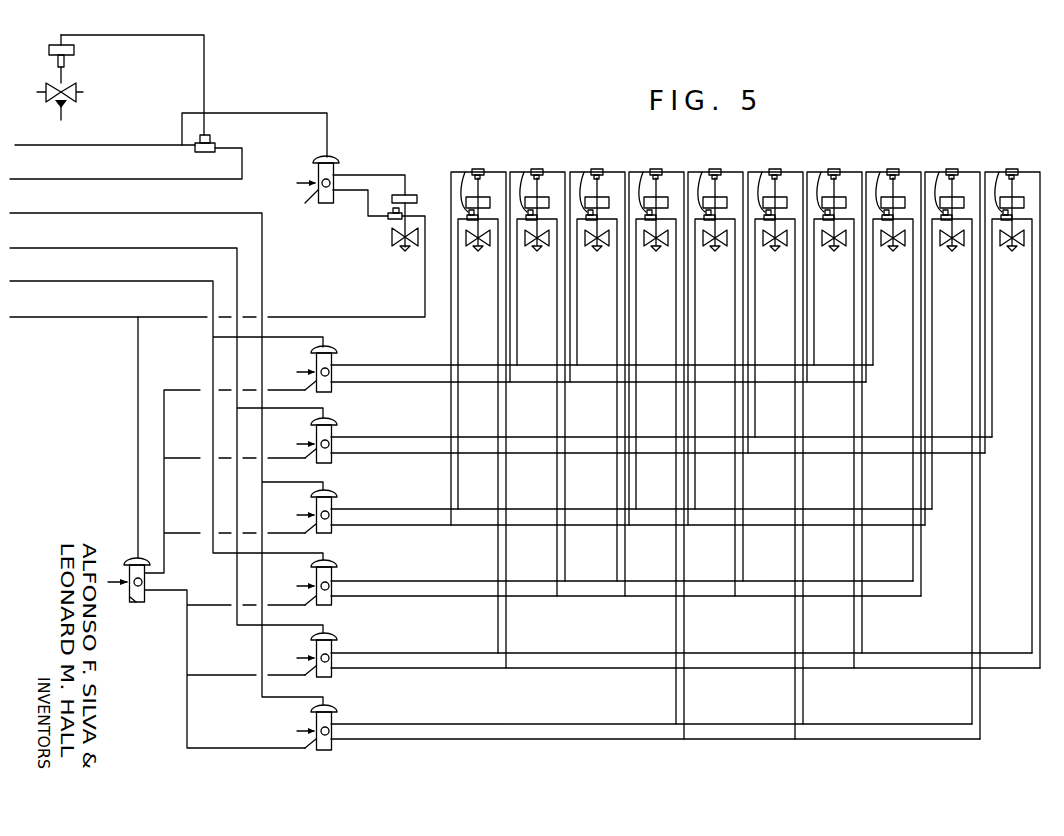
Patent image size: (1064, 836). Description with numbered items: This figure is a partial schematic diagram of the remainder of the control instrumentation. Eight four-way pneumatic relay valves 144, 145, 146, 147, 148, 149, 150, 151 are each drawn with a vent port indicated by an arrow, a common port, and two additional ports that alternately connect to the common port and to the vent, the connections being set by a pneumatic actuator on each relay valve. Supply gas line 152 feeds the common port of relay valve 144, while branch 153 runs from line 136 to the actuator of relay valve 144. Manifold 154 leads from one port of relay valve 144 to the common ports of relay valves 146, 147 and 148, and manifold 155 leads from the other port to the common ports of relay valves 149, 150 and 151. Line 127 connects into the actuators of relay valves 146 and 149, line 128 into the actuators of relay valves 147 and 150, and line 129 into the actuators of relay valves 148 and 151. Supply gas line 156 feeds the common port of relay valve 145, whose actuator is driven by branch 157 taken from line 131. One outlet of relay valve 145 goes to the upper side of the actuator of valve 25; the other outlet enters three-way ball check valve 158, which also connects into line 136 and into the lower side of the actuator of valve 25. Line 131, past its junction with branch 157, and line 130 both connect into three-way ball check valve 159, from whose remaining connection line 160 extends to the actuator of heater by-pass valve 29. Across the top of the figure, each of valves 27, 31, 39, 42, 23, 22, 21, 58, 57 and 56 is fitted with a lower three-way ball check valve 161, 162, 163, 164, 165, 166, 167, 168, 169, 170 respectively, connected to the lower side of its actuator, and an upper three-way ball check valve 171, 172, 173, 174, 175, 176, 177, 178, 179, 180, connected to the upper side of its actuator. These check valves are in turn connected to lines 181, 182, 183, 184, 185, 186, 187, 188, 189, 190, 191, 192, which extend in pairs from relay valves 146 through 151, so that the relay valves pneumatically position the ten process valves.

The heater by-pass valve 29 is at (48, 84).
The valve 25 is at (402, 248).
The valve 27 is at (488, 245).
The valve 31 is at (547, 245).
The valve 39 is at (607, 245).
The valve 42 is at (666, 245).
The valve 23 is at (725, 245).
The valve 22 is at (785, 245).
The valve 21 is at (844, 245).
The valve 58 is at (903, 245).
The valve 57 is at (962, 245).
The valve 56 is at (1022, 245).
The line 127 is at (70, 281).
The line 128 is at (70, 248).
The line 129 is at (70, 213).
The line 130 is at (68, 179).
The line 131 is at (65, 145).
The line 136 is at (68, 317).
The four-way pneumatic relay valve 144 is at (147, 585).
The four-way pneumatic relay valve 145 is at (318, 170).
The four-way pneumatic relay valve 146 is at (338, 354).
The four-way pneumatic relay valve 147 is at (337, 426).
The four-way pneumatic relay valve 148 is at (337, 498).
The four-way pneumatic relay valve 149 is at (337, 568).
The four-way pneumatic relay valve 150 is at (337, 640).
The four-way pneumatic relay valve 151 is at (337, 713).
The supply gas line 152 is at (130, 597).
The branch 153 is at (138, 408).
The manifold 154 is at (164, 550).
The manifold 155 is at (187, 596).
The supply gas line 156 is at (305, 203).
The branch 157 is at (244, 113).
The three-way ball check valve 158 is at (390, 220).
The three-way ball check valve 159 is at (215, 142).
The line 160 is at (205, 58).
The lower three-way ball check valve 161 is at (463, 172).
The lower three-way ball check valve 162 is at (522, 172).
The lower three-way ball check valve 163 is at (582, 172).
The lower three-way ball check valve 164 is at (641, 172).
The lower three-way ball check valve 165 is at (700, 172).
The lower three-way ball check valve 166 is at (760, 172).
The lower three-way ball check valve 167 is at (819, 172).
The lower three-way ball check valve 168 is at (878, 172).
The lower three-way ball check valve 169 is at (937, 172).
The lower three-way ball check valve 170 is at (997, 172).
The upper three-way ball check valve 171 is at (478, 167).
The upper three-way ball check valve 172 is at (537, 167).
The upper three-way ball check valve 173 is at (597, 167).
The upper three-way ball check valve 174 is at (656, 167).
The upper three-way ball check valve 175 is at (715, 167).
The upper three-way ball check valve 176 is at (775, 167).
The upper three-way ball check valve 177 is at (834, 167).
The upper three-way ball check valve 178 is at (893, 167).
The upper three-way ball check valve 179 is at (952, 167).
The upper three-way ball check valve 180 is at (1012, 167).
The line 181 is at (433, 365).
The line 182 is at (433, 382).
The line 183 is at (375, 437).
The line 184 is at (378, 453).
The line 185 is at (380, 509).
The line 186 is at (388, 525).
The line 187 is at (390, 581).
The line 188 is at (397, 596).
The line 189 is at (400, 653).
The line 190 is at (405, 668).
The line 191 is at (406, 724).
The line 192 is at (410, 739).